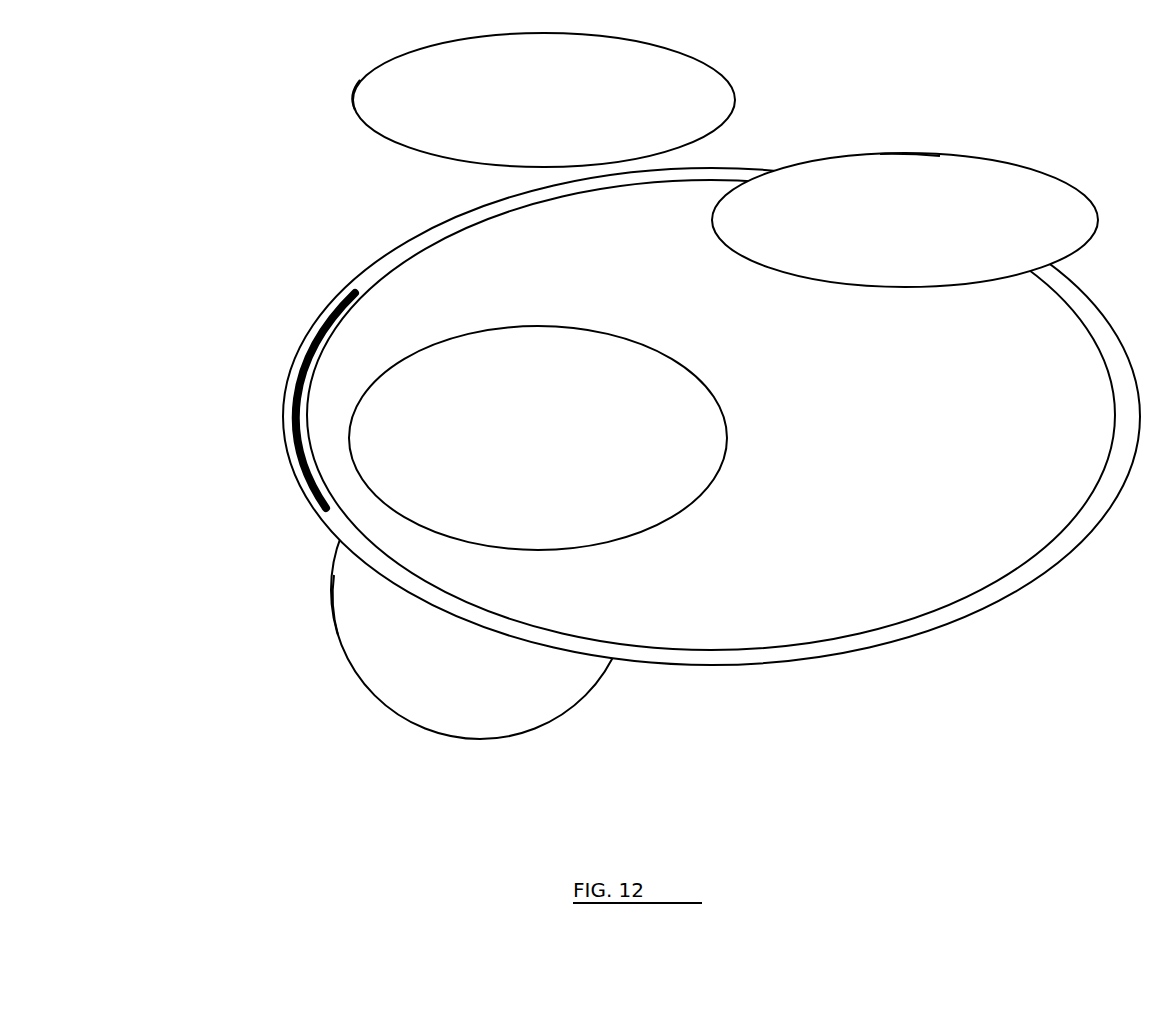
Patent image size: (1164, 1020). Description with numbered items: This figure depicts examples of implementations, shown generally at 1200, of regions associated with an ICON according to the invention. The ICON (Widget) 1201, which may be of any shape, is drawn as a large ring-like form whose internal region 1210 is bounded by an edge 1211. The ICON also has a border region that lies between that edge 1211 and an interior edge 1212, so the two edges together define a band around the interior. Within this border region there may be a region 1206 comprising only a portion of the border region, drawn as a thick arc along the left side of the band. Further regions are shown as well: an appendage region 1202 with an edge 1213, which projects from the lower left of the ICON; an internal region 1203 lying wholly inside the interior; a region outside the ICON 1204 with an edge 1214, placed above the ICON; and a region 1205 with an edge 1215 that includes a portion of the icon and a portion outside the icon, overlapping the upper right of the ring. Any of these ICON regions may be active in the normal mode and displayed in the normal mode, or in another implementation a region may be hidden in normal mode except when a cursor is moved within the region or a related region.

The example implementations of regions 1200 is at (206, 806).
The ICON 1201 is at (677, 416).
The appendage region 1202 is at (479, 684).
The internal region 1203 is at (519, 474).
The region outside the ICON 1204 is at (604, 89).
The region including a portion of the icon and a portion outside the icon 1205 is at (855, 219).
The region comprising a portion of the border region 1206 is at (295, 375).
The internal region 1210 is at (775, 376).
The edge 1211 is at (367, 263).
The interior edge 1212 is at (392, 275).
The edge 1213 is at (333, 608).
The edge 1214 is at (353, 87).
The edge 1215 is at (922, 152).